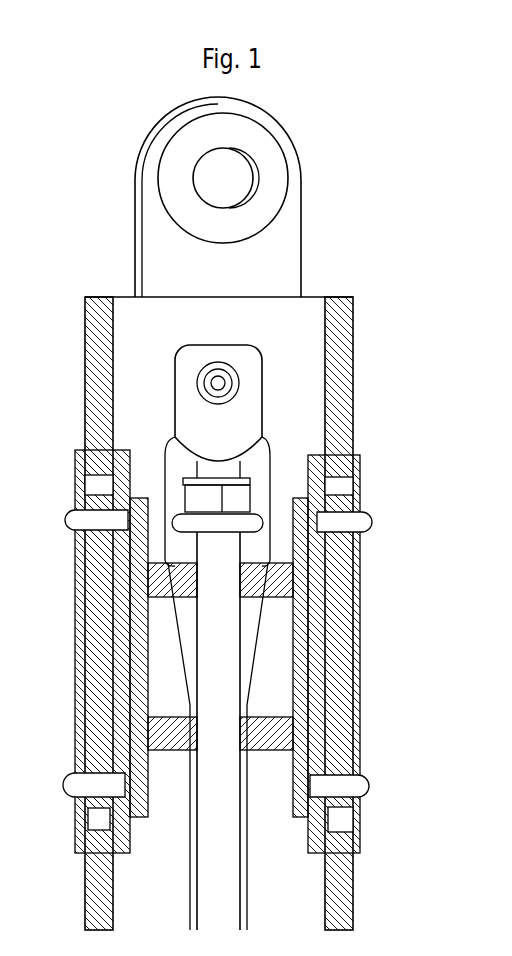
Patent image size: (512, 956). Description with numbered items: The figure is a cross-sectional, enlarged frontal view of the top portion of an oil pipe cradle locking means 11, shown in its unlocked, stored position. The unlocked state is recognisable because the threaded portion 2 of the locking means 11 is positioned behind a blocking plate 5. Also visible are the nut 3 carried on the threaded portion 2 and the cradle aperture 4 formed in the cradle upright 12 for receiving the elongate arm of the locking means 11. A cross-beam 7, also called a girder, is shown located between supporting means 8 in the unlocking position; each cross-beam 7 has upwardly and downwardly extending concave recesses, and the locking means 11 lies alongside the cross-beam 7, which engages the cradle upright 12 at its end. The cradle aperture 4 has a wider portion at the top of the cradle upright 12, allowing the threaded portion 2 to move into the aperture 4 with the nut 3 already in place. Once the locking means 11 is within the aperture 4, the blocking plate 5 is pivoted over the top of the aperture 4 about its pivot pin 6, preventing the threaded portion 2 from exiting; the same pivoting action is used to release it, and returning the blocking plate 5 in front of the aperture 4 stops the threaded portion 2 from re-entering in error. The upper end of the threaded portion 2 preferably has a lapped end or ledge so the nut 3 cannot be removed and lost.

The threaded portion 2 is at (233, 548).
The nut 3 is at (235, 500).
The cradle aperture 4 is at (260, 465).
The blocking plate 5 is at (243, 412).
The pivot pin 6 is at (228, 368).
The cross-beam 7 is at (290, 730).
The supporting means 8 is at (350, 818).
The locking means 11 is at (230, 614).
The cradle upright 12 is at (295, 313).